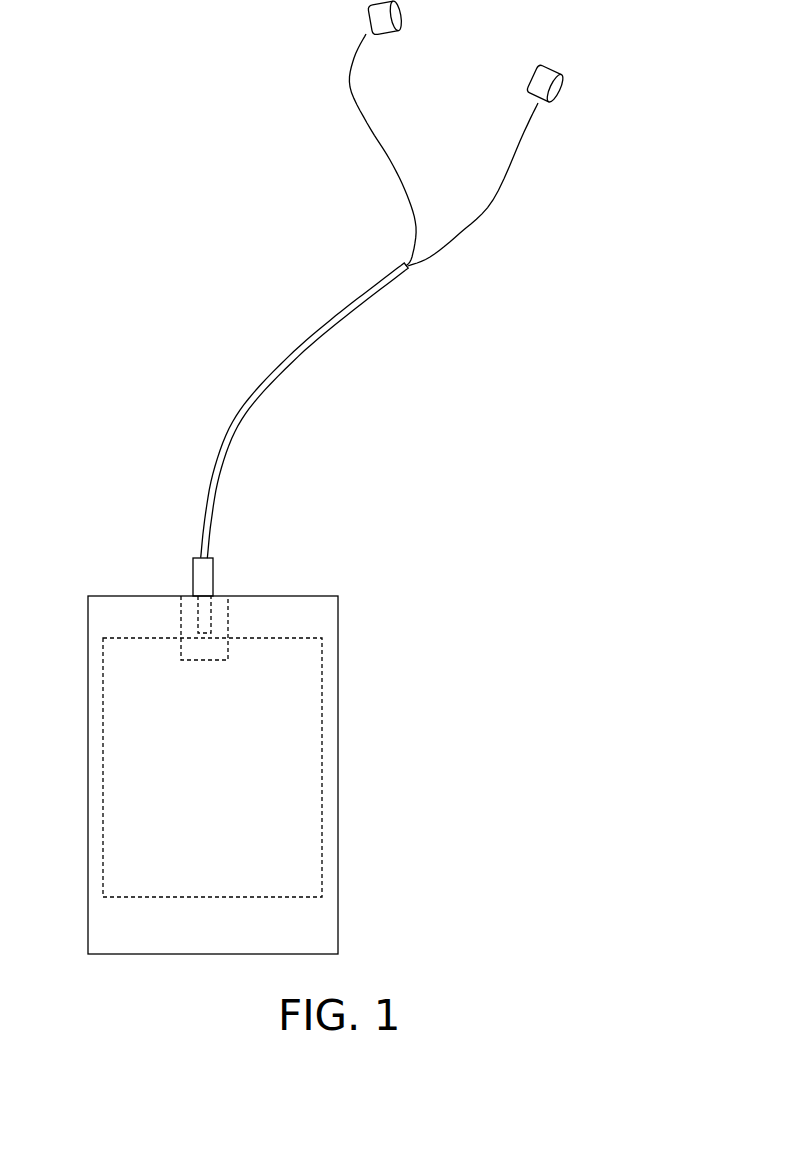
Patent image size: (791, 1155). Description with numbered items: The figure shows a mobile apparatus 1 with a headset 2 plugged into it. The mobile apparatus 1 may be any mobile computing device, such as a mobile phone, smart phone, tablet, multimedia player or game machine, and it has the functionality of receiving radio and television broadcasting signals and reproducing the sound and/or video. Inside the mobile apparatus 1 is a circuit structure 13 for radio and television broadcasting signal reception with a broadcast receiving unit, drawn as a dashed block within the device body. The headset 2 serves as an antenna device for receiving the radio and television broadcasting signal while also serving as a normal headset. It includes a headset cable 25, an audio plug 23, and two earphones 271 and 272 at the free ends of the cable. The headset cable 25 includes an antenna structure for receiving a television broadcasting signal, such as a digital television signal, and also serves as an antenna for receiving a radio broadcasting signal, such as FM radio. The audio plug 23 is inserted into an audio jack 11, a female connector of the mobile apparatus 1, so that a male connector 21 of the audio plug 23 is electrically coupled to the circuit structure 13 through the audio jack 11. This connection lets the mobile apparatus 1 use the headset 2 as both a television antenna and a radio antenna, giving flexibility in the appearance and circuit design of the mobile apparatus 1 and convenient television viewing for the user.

The mobile apparatus 1 is at (338, 727).
The audio jack 11 is at (228, 612).
The circuit structure 13 is at (322, 690).
The headset 2 is at (302, 373).
The male connector 21 is at (193, 609).
The audio plug 23 is at (193, 577).
The headset cable 25 is at (215, 503).
The earphone 271 is at (346, 12).
The earphone 272 is at (575, 108).